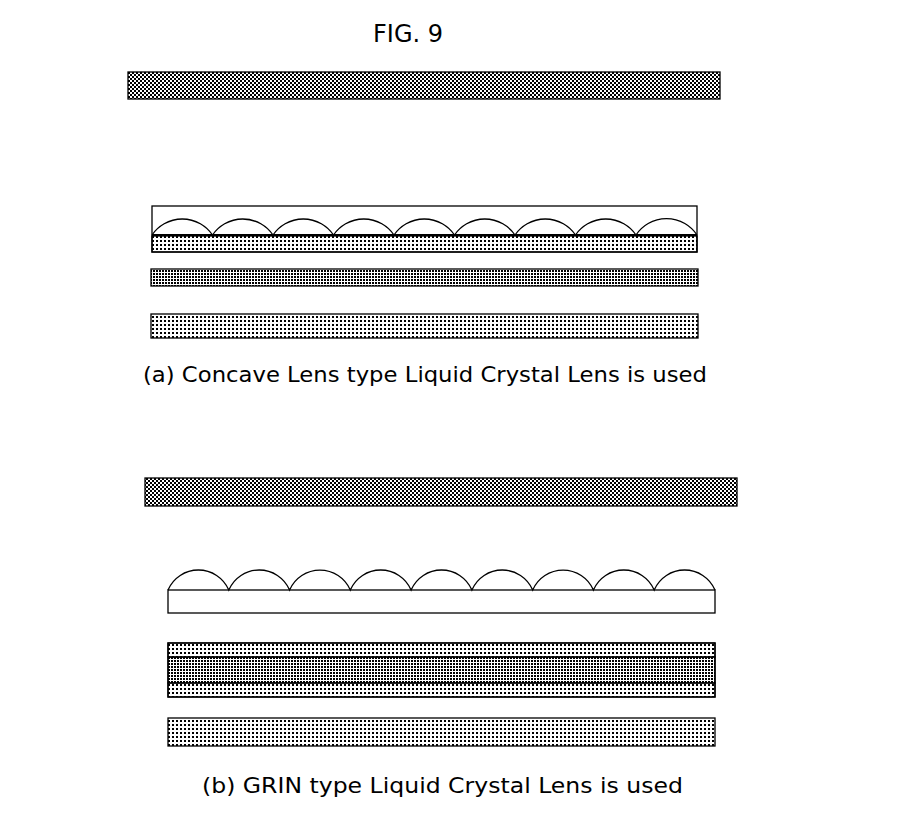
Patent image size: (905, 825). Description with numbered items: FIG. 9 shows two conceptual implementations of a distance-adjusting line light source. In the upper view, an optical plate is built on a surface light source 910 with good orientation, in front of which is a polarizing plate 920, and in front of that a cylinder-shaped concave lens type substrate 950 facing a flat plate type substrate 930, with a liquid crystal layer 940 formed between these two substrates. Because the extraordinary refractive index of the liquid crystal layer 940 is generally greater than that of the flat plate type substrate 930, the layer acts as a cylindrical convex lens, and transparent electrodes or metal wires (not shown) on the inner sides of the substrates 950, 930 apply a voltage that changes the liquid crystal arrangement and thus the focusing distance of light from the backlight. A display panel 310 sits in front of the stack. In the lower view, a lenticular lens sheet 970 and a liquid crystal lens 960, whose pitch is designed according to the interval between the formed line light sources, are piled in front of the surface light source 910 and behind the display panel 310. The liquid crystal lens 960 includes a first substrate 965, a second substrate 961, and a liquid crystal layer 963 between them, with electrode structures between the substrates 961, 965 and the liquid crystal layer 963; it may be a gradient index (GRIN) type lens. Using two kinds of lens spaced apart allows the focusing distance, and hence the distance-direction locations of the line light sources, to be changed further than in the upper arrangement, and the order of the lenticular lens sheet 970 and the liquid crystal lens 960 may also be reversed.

The display panel 310 is at (403, 289).
The surface light source 910 is at (405, 530).
The polarizing plate 920 is at (396, 278).
The flat plate type substrate 930 is at (697, 245).
The liquid crystal layer 940 is at (165, 228).
The concave lens type substrate 950 is at (163, 228).
The liquid crystal lens 960 is at (720, 643).
The second substrate 961 is at (167, 692).
The liquid crystal layer 963 is at (167, 670).
The first substrate 965 is at (167, 647).
The lenticular lens sheet 970 is at (722, 568).